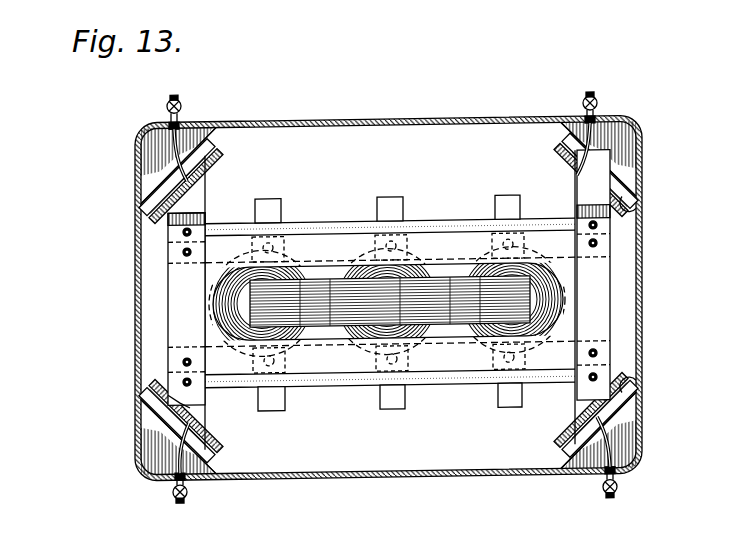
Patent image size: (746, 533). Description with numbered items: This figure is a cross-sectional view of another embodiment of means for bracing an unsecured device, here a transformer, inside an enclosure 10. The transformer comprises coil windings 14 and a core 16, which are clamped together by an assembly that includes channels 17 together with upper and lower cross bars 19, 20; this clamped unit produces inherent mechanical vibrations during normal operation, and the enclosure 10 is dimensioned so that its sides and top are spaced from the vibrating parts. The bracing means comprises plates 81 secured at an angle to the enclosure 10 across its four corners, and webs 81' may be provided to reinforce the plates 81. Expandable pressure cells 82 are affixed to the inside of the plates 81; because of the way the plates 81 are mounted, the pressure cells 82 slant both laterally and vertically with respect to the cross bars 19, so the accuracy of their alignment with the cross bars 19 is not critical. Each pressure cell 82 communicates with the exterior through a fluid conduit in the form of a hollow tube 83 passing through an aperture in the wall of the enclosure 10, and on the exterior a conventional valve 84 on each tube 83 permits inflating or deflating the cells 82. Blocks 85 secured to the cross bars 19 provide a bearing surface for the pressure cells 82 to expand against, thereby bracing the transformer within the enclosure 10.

The enclosure 10 is at (433, 121).
The coil windings 14 is at (563, 300).
The core 16 is at (447, 350).
The channels 17 is at (350, 240).
The upper cross bars 19 is at (180, 278).
The lower cross bars 20 is at (268, 198).
The plates 81 is at (427, 297).
The webs 81' is at (429, 297).
The pressure cells 82 is at (185, 218).
The hollow tubes 83 is at (165, 196).
The valves 84 is at (583, 103).
The blocks 85 is at (185, 400).